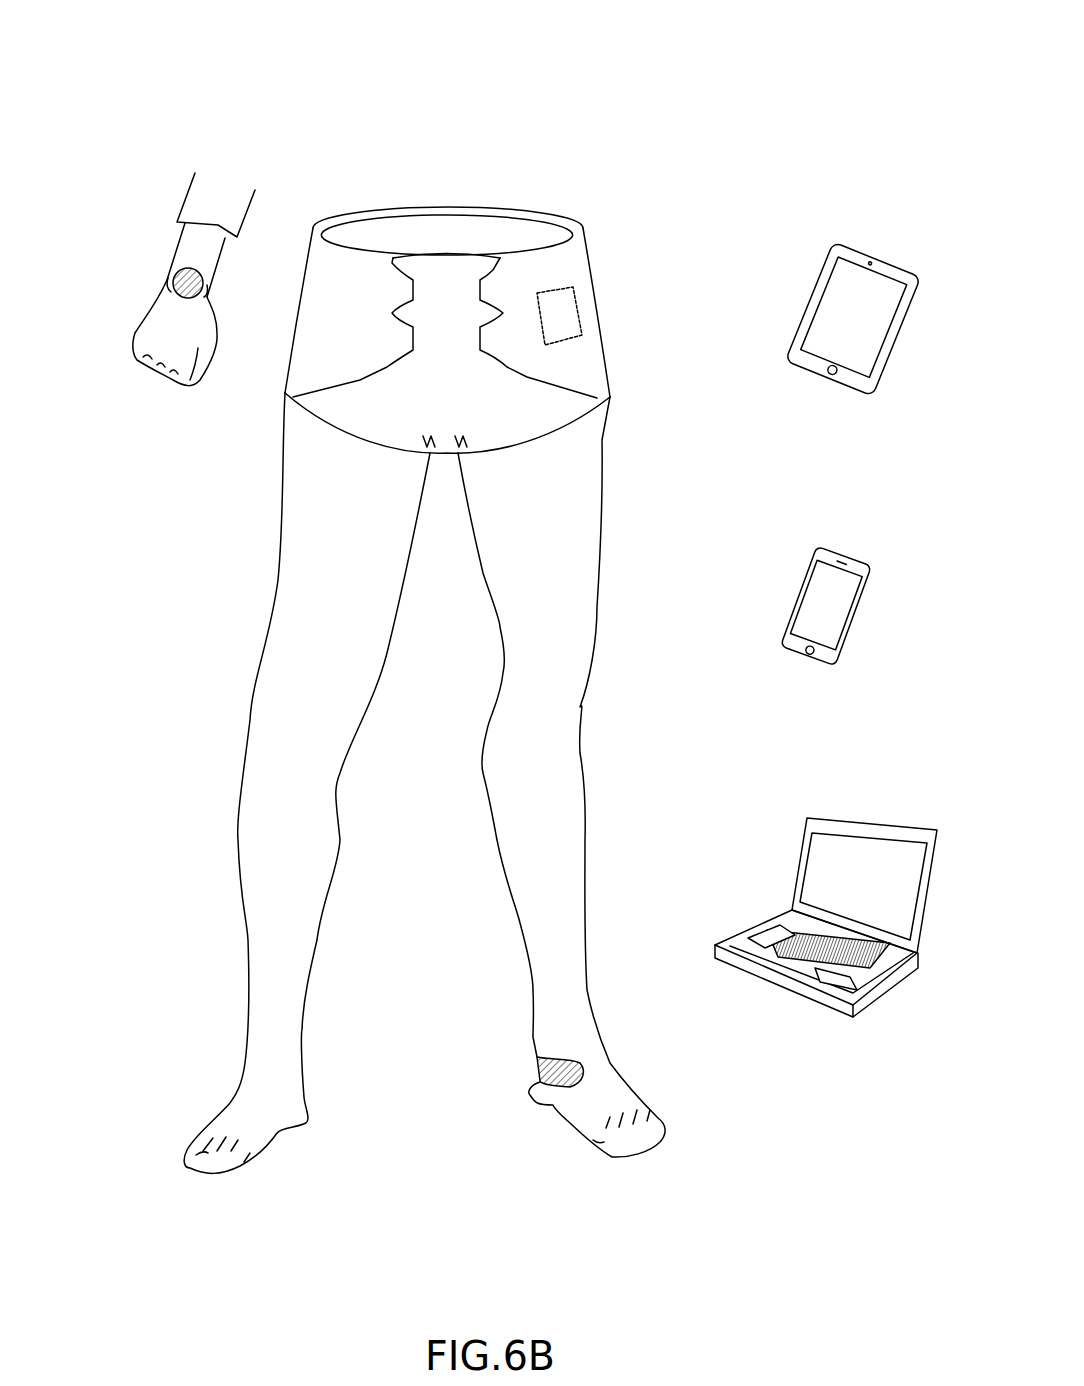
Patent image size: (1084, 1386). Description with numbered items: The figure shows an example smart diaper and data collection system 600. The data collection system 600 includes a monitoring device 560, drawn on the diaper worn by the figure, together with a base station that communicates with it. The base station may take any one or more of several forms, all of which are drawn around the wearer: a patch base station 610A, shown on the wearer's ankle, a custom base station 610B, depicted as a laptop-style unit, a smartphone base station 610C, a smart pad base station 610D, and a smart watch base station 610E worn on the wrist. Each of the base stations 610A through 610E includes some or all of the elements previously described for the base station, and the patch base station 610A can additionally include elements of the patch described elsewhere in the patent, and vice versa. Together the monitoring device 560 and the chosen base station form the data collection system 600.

The data collection system 600 is at (568, 61).
The monitoring device 560 is at (562, 315).
The patch base station 610A is at (552, 1093).
The custom base station 610B is at (883, 817).
The smartphone base station 610C is at (842, 547).
The smart pad base station 610D is at (863, 247).
The smart watch base station 610E is at (161, 272).